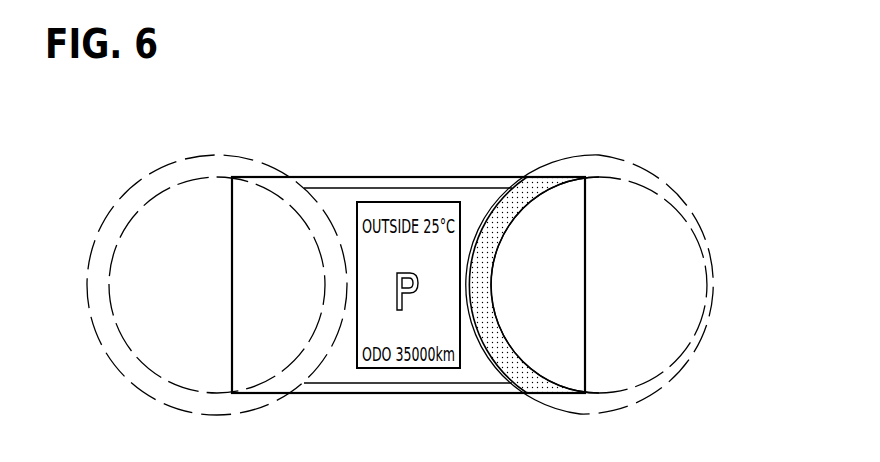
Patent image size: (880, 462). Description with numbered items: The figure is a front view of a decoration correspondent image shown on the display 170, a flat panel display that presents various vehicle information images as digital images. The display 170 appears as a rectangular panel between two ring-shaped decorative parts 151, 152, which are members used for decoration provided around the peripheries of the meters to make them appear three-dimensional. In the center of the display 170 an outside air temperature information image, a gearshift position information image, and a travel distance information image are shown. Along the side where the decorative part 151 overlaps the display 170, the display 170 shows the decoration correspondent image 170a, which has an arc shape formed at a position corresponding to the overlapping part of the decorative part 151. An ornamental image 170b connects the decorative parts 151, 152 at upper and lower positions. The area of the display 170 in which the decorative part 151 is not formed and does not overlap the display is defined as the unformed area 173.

The decorative part 151 is at (588, 160).
The decorative part 152 is at (203, 162).
The display 170 is at (347, 168).
The decoration correspondent image 170a is at (487, 258).
The ornamental image 170b is at (397, 187).
The unformed area 173 is at (502, 287).